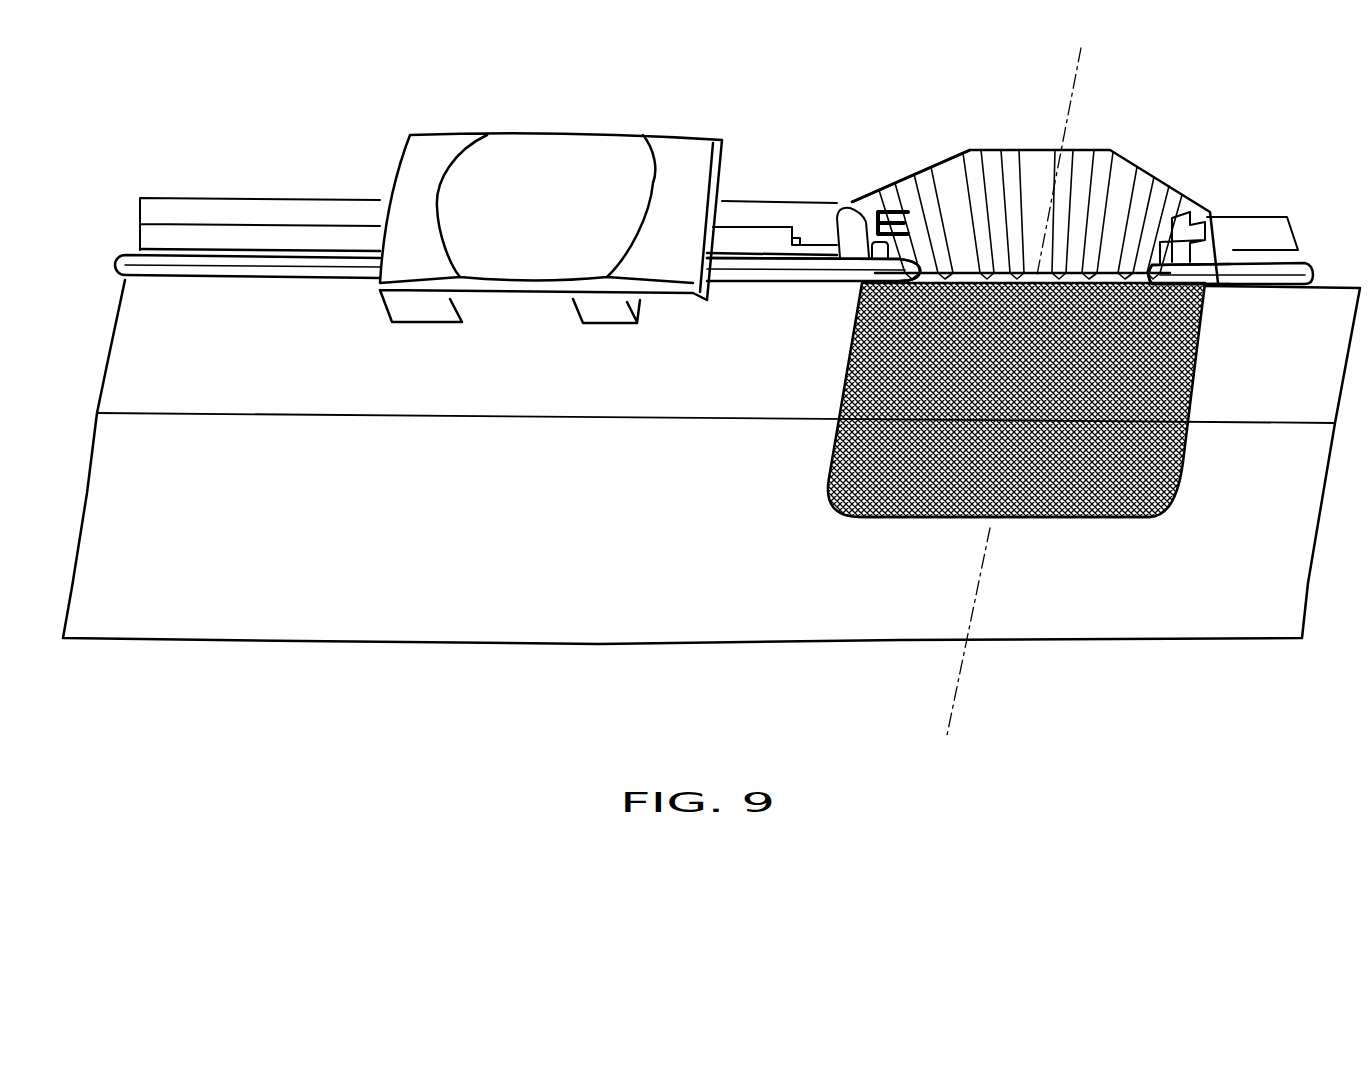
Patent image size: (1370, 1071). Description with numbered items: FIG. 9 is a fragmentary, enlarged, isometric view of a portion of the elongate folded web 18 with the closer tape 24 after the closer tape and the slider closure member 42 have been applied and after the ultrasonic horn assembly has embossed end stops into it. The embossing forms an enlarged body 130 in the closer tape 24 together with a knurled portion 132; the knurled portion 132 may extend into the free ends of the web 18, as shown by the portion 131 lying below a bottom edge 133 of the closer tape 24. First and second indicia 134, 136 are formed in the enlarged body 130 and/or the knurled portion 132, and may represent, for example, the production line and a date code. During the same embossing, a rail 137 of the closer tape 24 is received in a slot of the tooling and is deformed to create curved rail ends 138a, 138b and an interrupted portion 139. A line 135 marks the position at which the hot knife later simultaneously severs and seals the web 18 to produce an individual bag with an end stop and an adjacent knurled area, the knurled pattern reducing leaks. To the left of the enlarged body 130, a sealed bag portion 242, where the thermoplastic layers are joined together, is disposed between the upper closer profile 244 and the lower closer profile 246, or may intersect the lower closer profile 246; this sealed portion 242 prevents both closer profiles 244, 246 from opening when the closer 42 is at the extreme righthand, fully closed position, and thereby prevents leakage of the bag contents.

The web 18 is at (1208, 618).
The closer tape 24 is at (915, 192).
The slider closure member 42 is at (382, 198).
The enlarged body 130 is at (1150, 185).
The portion 131 is at (828, 463).
The knurled portion 132 is at (883, 515).
The bottom edge 133 is at (626, 418).
The first indicia 134 is at (840, 207).
The line 135 is at (1077, 85).
The second indicia 136 is at (1212, 212).
The rail 137 is at (759, 257).
The curved rail end 138a is at (920, 270).
The curved rail end 138b is at (1190, 267).
The interrupted portion 139 is at (1102, 212).
The sealed bag portion 242 is at (797, 240).
The upper closer profile 244 is at (268, 225).
The lower closer profile 246 is at (174, 247).